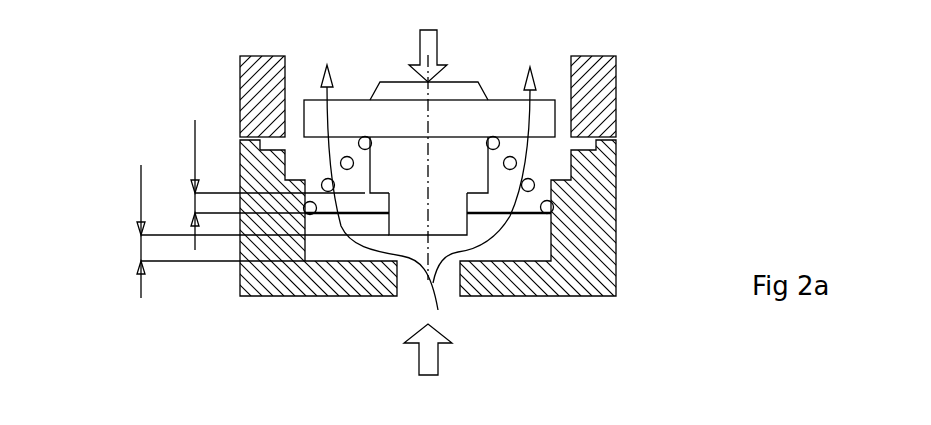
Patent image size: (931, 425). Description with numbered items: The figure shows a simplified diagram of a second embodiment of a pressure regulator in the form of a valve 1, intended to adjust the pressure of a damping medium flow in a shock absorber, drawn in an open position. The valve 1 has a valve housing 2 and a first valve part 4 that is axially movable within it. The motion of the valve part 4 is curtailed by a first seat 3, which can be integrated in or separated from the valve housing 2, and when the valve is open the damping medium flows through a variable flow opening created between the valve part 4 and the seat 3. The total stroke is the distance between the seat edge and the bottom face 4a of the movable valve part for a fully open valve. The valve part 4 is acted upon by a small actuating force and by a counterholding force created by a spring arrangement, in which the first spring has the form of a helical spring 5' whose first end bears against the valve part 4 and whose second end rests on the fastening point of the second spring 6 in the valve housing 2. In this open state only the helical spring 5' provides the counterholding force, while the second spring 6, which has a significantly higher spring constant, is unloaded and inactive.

The valve 1 is at (215, 52).
The valve housing 2 is at (607, 65).
The first seat 3 is at (470, 265).
The first valve part 4 is at (455, 168).
The bottom face of the movable valve part 4a is at (470, 237).
The helical spring 5' is at (502, 107).
The second spring 6 is at (553, 213).